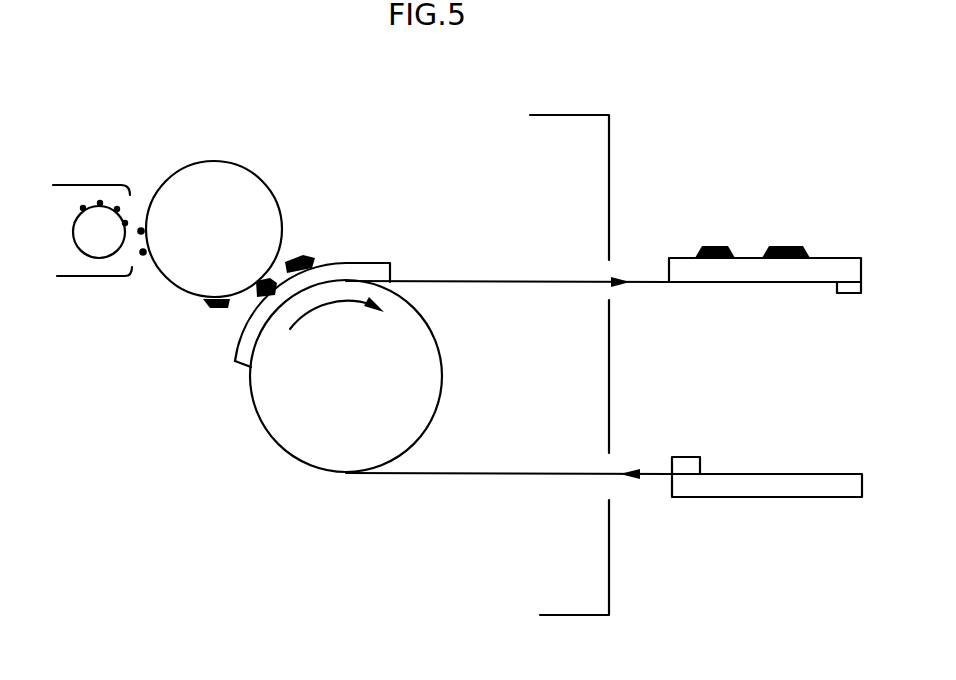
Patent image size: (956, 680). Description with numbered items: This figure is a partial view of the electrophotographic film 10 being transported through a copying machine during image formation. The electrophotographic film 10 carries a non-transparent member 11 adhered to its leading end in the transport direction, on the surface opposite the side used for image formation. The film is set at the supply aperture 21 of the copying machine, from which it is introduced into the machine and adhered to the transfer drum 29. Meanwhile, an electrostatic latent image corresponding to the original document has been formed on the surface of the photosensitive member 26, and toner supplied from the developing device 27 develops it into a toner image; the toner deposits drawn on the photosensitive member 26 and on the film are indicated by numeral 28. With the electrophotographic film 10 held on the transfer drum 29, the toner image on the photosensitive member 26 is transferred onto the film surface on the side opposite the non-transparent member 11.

The electrophotographic film 10 is at (247, 340).
The non-transparent member 11 is at (840, 288).
The supply aperture 21 is at (603, 487).
The photosensitive member 26 is at (225, 185).
The developing device 27 is at (80, 183).
The toner 28 is at (142, 232).
The transfer drum 29 is at (330, 422).